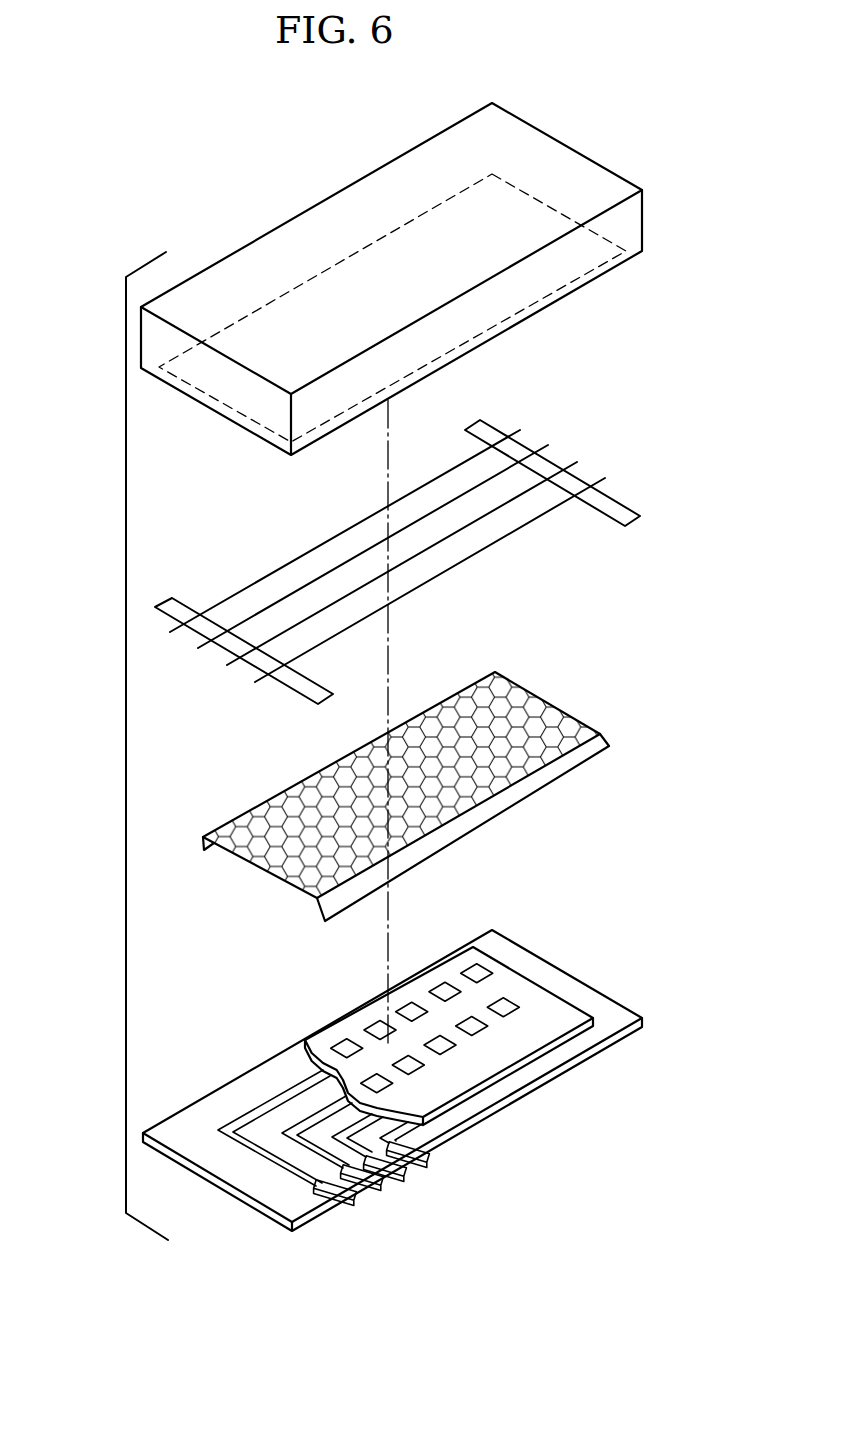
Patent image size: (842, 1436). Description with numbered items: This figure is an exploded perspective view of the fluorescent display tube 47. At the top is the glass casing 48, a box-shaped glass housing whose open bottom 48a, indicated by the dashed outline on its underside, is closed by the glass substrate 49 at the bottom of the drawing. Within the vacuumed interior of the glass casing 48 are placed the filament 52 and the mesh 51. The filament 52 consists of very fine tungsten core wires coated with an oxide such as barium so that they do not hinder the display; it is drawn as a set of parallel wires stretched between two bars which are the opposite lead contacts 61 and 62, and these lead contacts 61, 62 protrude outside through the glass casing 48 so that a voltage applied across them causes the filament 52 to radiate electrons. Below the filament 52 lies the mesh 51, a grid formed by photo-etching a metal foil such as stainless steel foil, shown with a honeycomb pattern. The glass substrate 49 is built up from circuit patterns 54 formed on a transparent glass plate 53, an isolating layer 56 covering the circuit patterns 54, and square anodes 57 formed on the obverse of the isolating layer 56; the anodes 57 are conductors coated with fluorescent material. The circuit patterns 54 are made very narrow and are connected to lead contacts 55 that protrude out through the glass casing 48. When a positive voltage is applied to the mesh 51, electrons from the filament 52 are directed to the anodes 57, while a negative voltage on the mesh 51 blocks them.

The fluorescent display tube 47 is at (126, 747).
The glass casing 48 is at (572, 147).
The open bottom 48a is at (188, 384).
The filament 52 is at (665, 498).
The lead contact 62 is at (630, 522).
The lead contact 61 is at (333, 693).
The mesh 51 is at (552, 686).
The glass substrate 49 is at (392, 1062).
The transparent glass plate 53 is at (245, 1165).
The circuit patterns 54 is at (255, 1112).
The lead contacts 55 is at (430, 1159).
The isolating layer 56 is at (350, 1030).
The square anodes 57 is at (507, 1008).